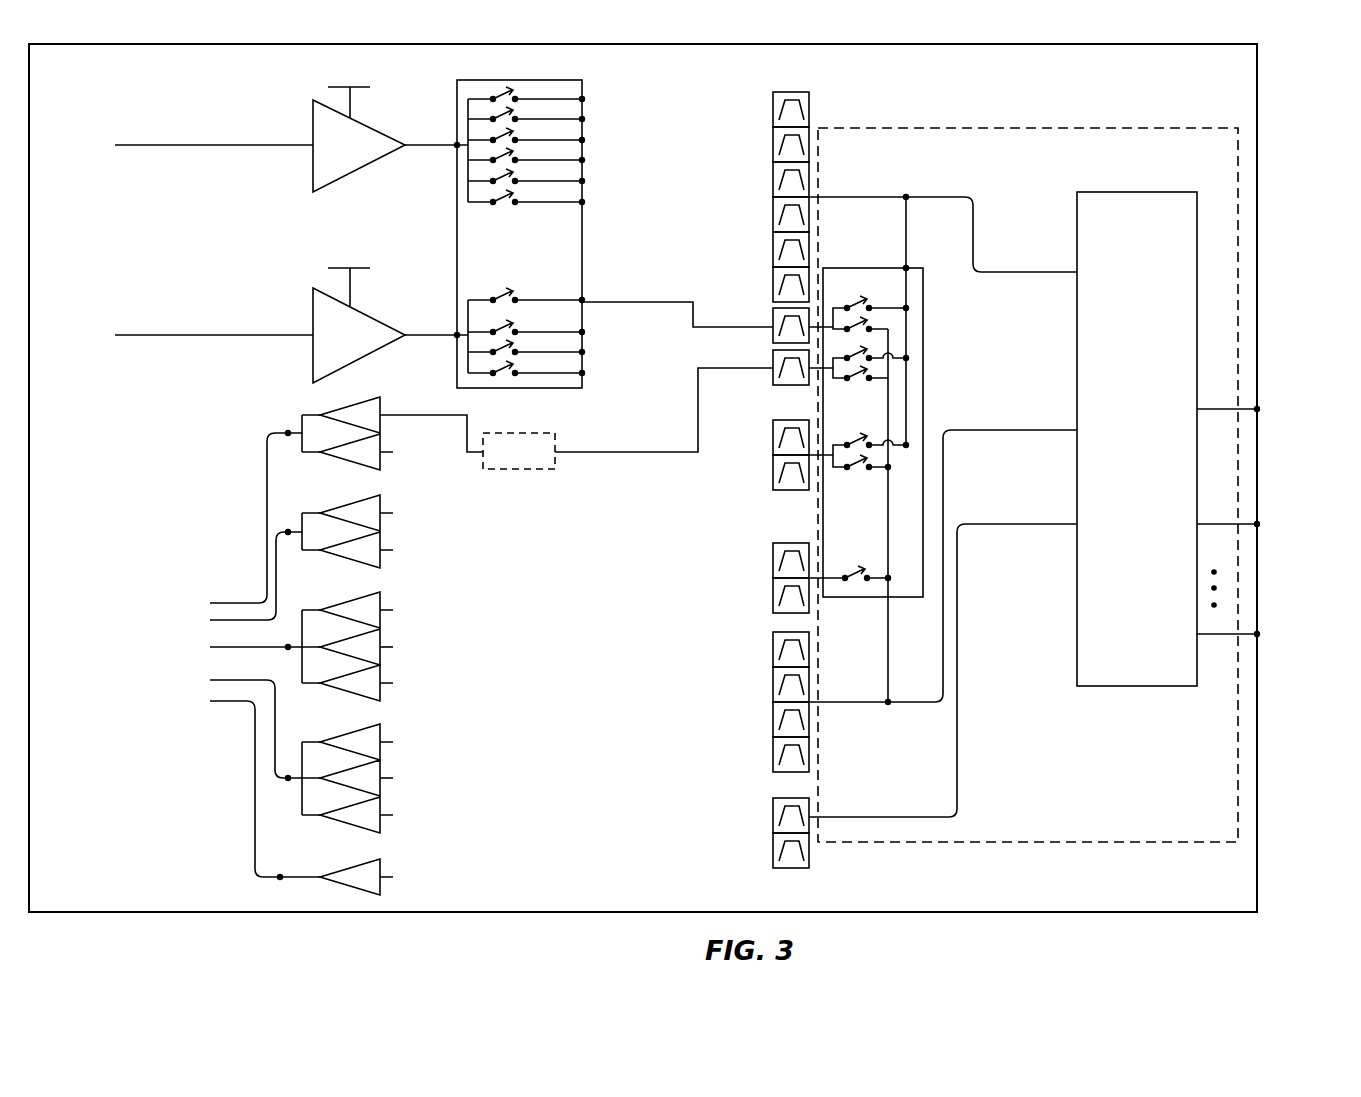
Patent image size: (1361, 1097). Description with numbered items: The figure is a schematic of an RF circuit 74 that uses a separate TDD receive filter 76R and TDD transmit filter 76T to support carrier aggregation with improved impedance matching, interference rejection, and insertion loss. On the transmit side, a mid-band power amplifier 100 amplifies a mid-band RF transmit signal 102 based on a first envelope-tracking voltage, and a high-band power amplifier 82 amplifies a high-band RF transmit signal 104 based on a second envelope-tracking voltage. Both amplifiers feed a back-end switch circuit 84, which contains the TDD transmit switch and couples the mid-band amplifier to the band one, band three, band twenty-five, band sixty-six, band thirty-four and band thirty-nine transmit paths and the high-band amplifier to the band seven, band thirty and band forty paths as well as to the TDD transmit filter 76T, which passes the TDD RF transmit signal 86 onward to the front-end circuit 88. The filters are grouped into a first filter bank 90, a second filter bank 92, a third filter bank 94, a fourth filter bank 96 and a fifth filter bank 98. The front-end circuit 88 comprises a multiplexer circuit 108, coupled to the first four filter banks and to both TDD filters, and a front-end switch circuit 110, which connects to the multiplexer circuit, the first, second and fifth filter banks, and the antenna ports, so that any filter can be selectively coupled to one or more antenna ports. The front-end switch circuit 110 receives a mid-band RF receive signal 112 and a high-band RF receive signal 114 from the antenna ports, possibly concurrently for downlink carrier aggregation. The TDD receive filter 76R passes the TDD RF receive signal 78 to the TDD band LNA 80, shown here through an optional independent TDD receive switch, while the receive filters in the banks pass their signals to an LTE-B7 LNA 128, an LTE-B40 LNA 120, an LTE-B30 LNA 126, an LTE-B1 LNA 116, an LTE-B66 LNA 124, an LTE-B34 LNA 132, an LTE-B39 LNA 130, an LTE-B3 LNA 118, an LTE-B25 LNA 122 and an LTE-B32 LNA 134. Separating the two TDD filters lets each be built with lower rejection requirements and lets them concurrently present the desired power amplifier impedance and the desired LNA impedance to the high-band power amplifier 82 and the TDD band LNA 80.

The RF circuit 74 is at (64, 83).
The mid-band RF transmit signal 102 is at (188, 152).
The high-band RF transmit signal 104 is at (188, 342).
The mid-band power amplifier 100 is at (348, 167).
The high-band power amplifier 82 is at (340, 357).
The back-end switch circuit 84 is at (525, 388).
The TDD RF transmit signal 86 is at (670, 312).
The TDD RF receive signal 78 is at (602, 442).
The TDD band LNA 80 is at (369, 424).
The LTE-B7 LNA 128 is at (370, 461).
The LTE-B40 LNA 120 is at (370, 522).
The LTE-B30 LNA 126 is at (370, 559).
The LTE-B1 LNA 116 is at (370, 619).
The LTE-B66 LNA 124 is at (370, 656).
The LTE-B34 LNA 132 is at (370, 692).
The LTE-B39 LNA 130 is at (370, 751).
The LTE-B3 LNA 118 is at (370, 787).
The LTE-B25 LNA 122 is at (370, 824).
The LTE-B32 LNA 134 is at (370, 886).
The TDD transmit filter 76T is at (773, 315).
The TDD receive filter 76R is at (772, 387).
The first filter bank 90 is at (785, 92).
The fourth filter bank 96 is at (790, 491).
The third filter bank 94 is at (790, 543).
The second filter bank 92 is at (788, 772).
The fifth filter bank 98 is at (788, 868).
The multiplexer circuit 108 is at (842, 597).
The front-end switch circuit 110 is at (1124, 458).
The mid-band RF receive signal 112 is at (945, 210).
The high-band RF receive signal 114 is at (945, 210).
The front-end circuit 88 is at (1209, 835).